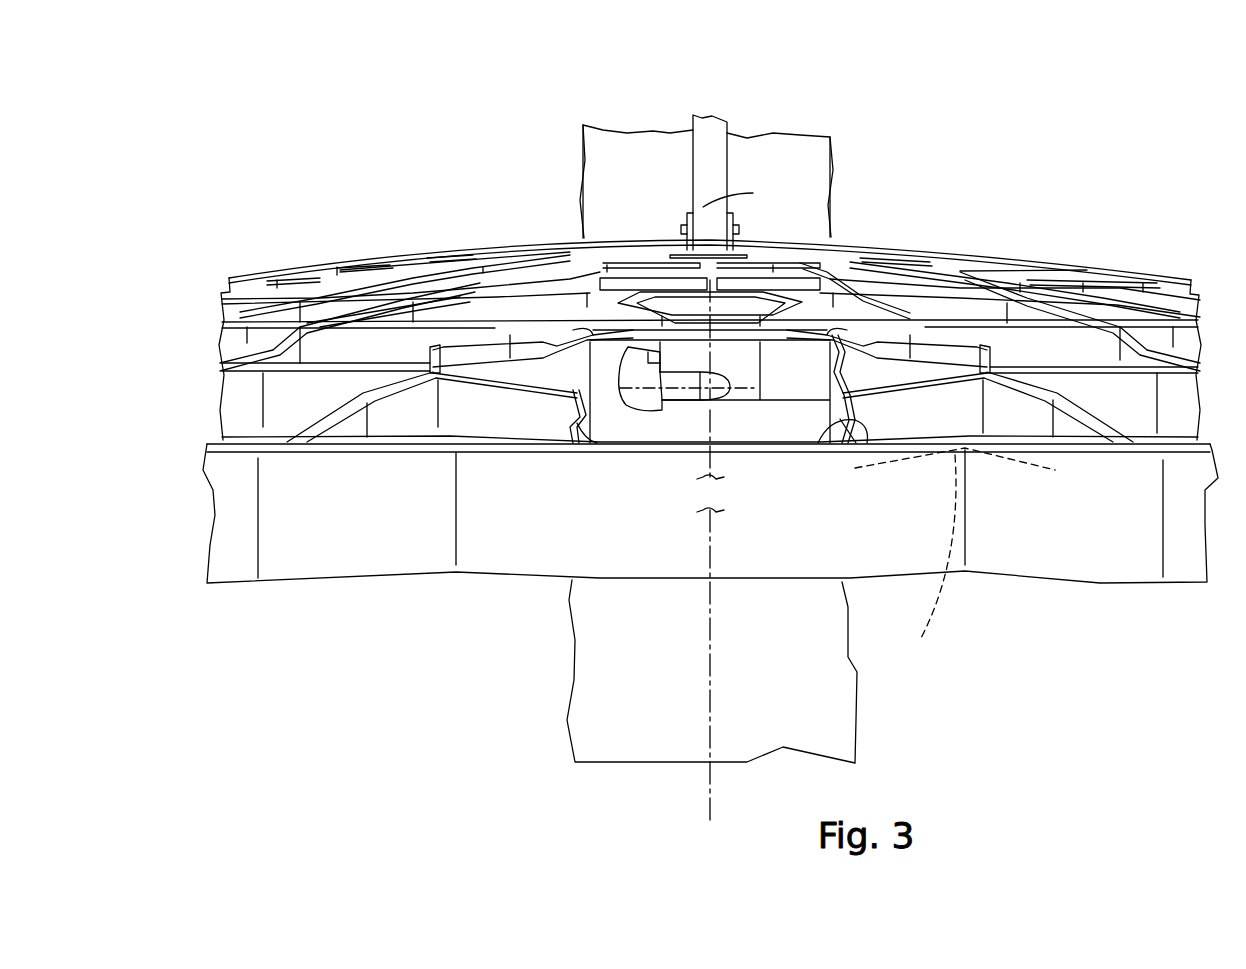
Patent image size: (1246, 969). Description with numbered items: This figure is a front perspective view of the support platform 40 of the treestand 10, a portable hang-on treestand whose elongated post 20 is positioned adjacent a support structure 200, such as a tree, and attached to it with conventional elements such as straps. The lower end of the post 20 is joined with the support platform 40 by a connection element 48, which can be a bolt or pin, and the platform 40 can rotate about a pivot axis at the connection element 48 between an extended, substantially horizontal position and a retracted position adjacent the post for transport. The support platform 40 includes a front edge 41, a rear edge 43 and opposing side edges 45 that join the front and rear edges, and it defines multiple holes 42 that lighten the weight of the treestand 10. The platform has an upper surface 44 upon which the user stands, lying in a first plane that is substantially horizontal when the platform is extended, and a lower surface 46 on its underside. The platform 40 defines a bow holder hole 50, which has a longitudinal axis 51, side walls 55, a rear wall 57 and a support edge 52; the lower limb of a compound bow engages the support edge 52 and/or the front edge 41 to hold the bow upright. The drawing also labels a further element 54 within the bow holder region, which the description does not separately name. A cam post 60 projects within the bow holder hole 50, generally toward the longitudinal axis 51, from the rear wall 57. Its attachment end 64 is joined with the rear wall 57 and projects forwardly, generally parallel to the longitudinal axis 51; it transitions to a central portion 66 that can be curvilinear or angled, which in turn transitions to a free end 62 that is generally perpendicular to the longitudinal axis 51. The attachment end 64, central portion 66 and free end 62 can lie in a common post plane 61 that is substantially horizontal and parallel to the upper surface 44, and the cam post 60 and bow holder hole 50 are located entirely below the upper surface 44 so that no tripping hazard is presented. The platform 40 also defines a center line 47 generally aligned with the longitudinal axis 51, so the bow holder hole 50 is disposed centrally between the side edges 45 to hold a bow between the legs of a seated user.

The treestand 10 is at (869, 147).
The post 20 is at (729, 152).
The support platform 40 is at (482, 305).
The front edge 41 is at (783, 507).
The holes 42 is at (690, 302).
The rear edge 43 is at (545, 245).
The upper surface 44 is at (860, 295).
The side edges 45 is at (310, 270).
The lower surface 46 is at (955, 558).
The center line 47 is at (713, 725).
The connection element 48 is at (740, 228).
The bow holder hole 50 is at (796, 423).
The longitudinal axis 51 is at (702, 462).
The support edge 52 is at (860, 428).
The brace 54 is at (567, 413).
The side walls 55 is at (582, 428).
The rear wall 57 is at (667, 350).
The cam post 60 is at (623, 378).
The post plane 61 is at (617, 380).
The free end 62 is at (727, 387).
The attachment end 64 is at (633, 357).
The central portion 66 is at (678, 378).
The support structure 200 is at (583, 660).